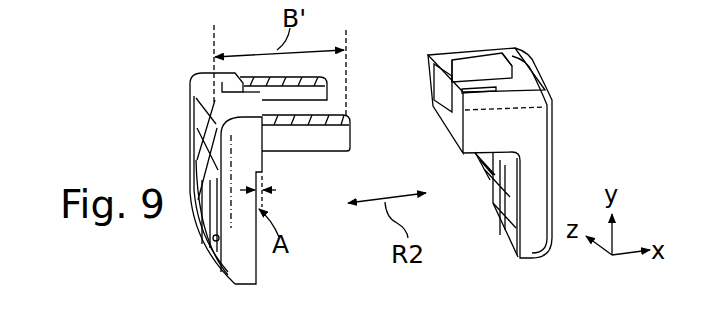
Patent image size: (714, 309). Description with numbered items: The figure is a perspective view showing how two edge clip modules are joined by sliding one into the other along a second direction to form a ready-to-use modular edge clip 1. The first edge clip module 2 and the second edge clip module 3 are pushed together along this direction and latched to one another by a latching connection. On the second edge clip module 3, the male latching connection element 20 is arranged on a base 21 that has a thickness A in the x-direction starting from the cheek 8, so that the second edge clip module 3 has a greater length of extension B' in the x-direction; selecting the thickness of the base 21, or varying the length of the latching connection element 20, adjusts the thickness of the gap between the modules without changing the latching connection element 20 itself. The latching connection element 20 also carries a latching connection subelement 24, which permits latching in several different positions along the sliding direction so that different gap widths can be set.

The modular edge clip 1 is at (562, 63).
The first edge clip module 2 is at (541, 141).
The second edge clip module 3 is at (232, 223).
The cheek 8 is at (259, 248).
The latching connection element 20 is at (350, 142).
The base 21 is at (263, 168).
The latching connection subelement 24 is at (325, 108).